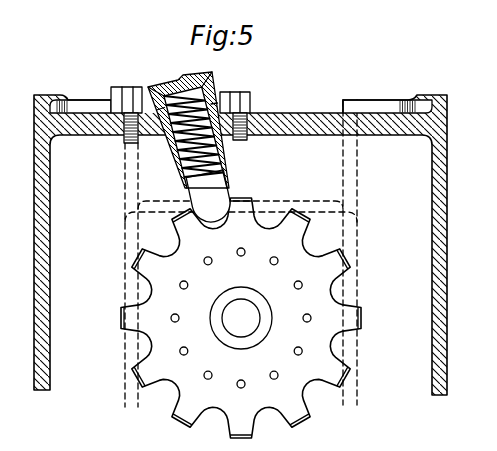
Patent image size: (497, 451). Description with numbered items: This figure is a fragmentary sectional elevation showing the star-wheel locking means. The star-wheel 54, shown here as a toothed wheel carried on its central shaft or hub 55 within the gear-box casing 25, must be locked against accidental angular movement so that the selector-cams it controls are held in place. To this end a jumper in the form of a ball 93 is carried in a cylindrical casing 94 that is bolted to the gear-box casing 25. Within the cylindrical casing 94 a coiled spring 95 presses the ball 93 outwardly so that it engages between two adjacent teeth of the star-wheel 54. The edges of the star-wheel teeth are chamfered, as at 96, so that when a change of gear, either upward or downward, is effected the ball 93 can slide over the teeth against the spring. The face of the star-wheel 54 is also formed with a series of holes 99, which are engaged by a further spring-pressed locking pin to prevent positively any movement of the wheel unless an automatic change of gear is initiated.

The housing / gear case 25 is at (284, 114).
The star-wheel 54 is at (330, 294).
The sprocket shaft / hub 55 is at (238, 332).
The ball 93 is at (202, 194).
The cylindrical casing 94 is at (168, 152).
The coiled spring 95 is at (218, 85).
The chamfered edges of star-wheel teeth 96 is at (334, 251).
The series of holes 99 is at (180, 283).